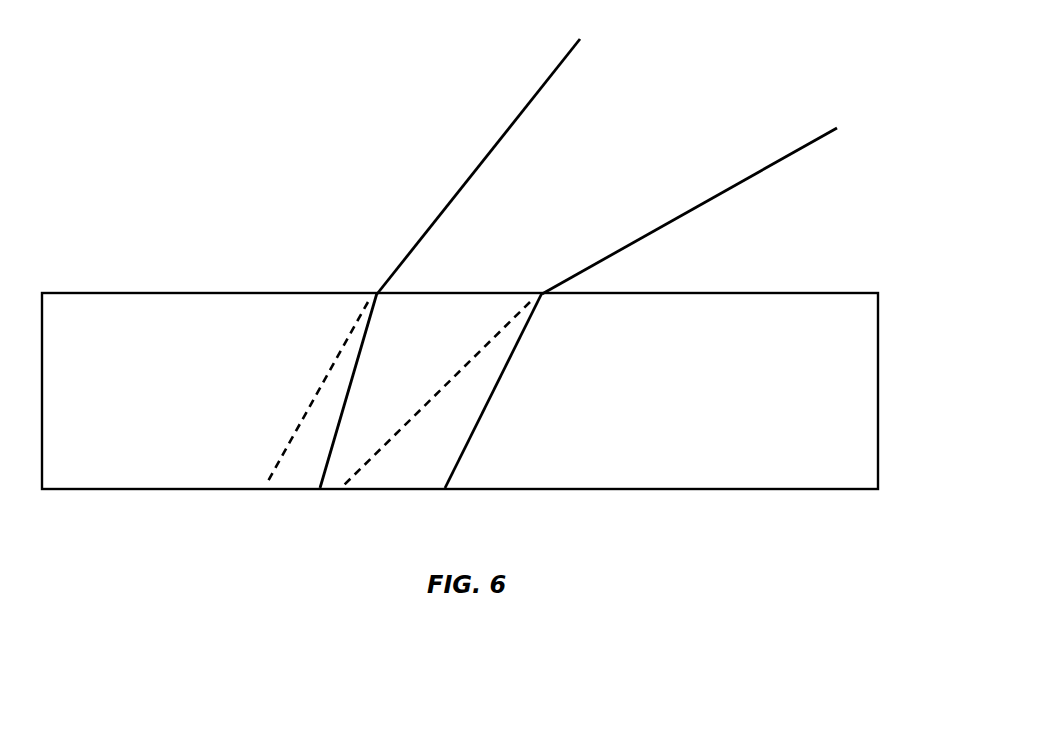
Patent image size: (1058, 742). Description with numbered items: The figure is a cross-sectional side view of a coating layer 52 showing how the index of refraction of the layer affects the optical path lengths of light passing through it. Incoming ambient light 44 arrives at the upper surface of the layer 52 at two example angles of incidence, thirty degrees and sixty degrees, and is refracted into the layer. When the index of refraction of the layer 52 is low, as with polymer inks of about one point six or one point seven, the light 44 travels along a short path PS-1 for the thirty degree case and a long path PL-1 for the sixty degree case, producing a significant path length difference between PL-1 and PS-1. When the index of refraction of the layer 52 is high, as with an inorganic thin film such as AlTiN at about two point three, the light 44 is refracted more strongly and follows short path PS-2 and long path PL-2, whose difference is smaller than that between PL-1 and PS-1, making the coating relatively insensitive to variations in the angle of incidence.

The ambient light 44 is at (517, 118).
The layer 52 is at (878, 380).
The short path PS-1 is at (361, 304).
The short path PS-2 is at (382, 300).
The long path PL-1 is at (343, 486).
The long path PL-2 is at (547, 300).